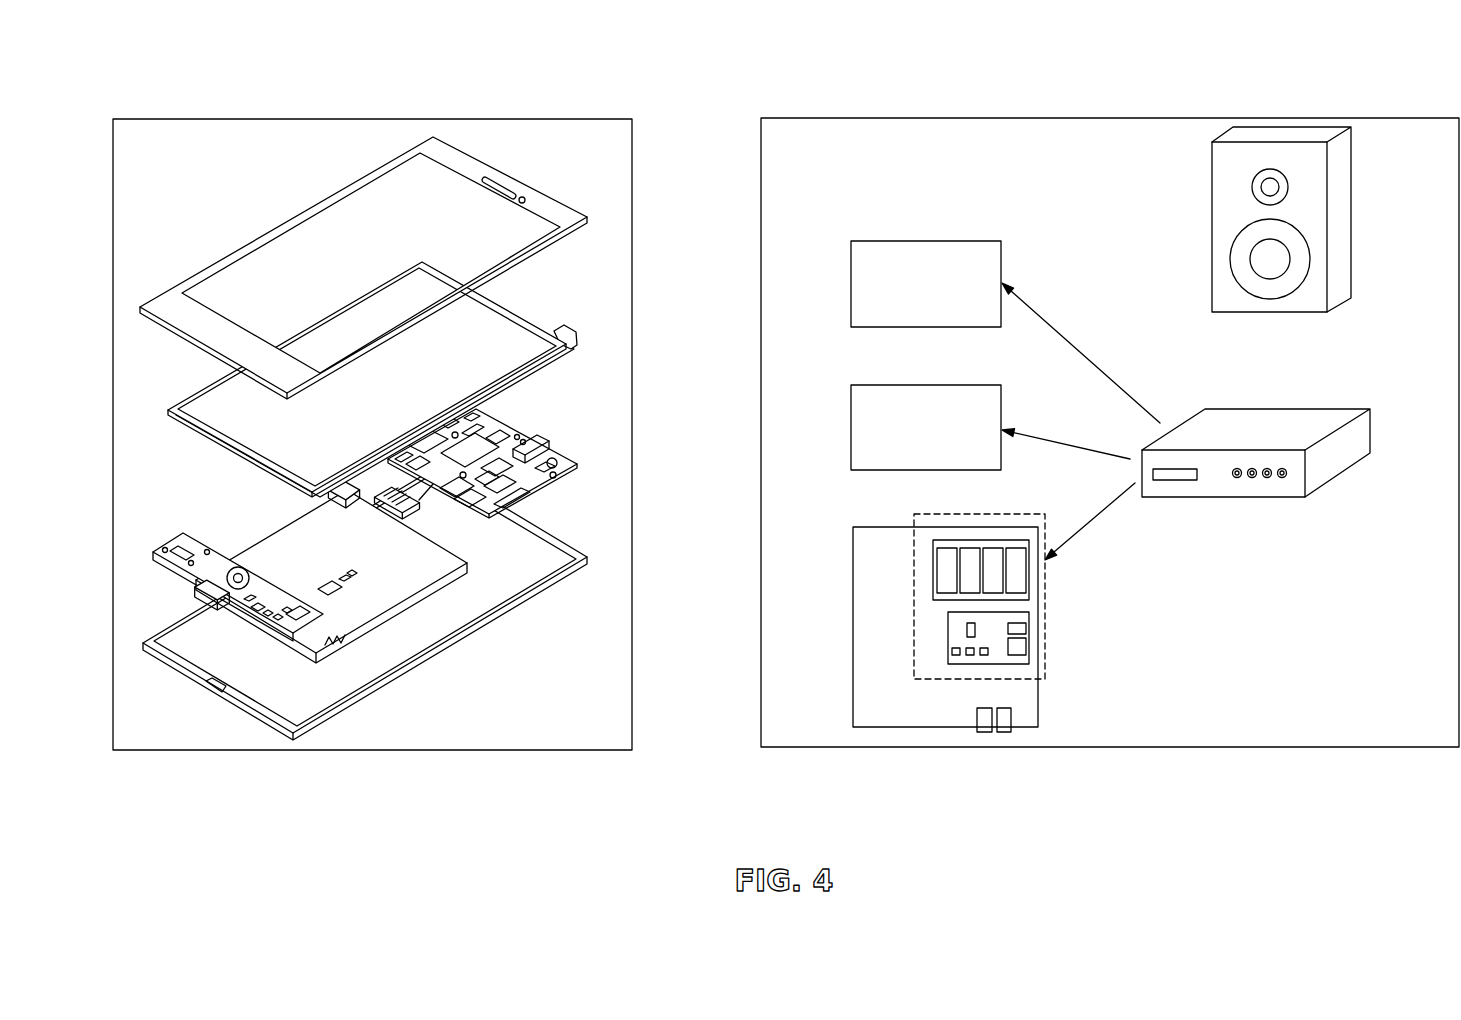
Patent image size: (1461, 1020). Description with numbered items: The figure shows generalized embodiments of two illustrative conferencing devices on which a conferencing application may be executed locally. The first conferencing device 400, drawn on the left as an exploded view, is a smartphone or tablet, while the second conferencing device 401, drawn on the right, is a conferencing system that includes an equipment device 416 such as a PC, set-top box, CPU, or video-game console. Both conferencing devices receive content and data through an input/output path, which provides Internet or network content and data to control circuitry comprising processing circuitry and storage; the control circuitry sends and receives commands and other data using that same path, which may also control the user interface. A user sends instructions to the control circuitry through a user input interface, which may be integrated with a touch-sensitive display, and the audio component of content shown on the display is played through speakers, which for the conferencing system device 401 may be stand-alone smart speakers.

The conferencing device 400 is at (205, 80).
The conferencing device 401 is at (1322, 70).
The equipment device 416 is at (1288, 408).